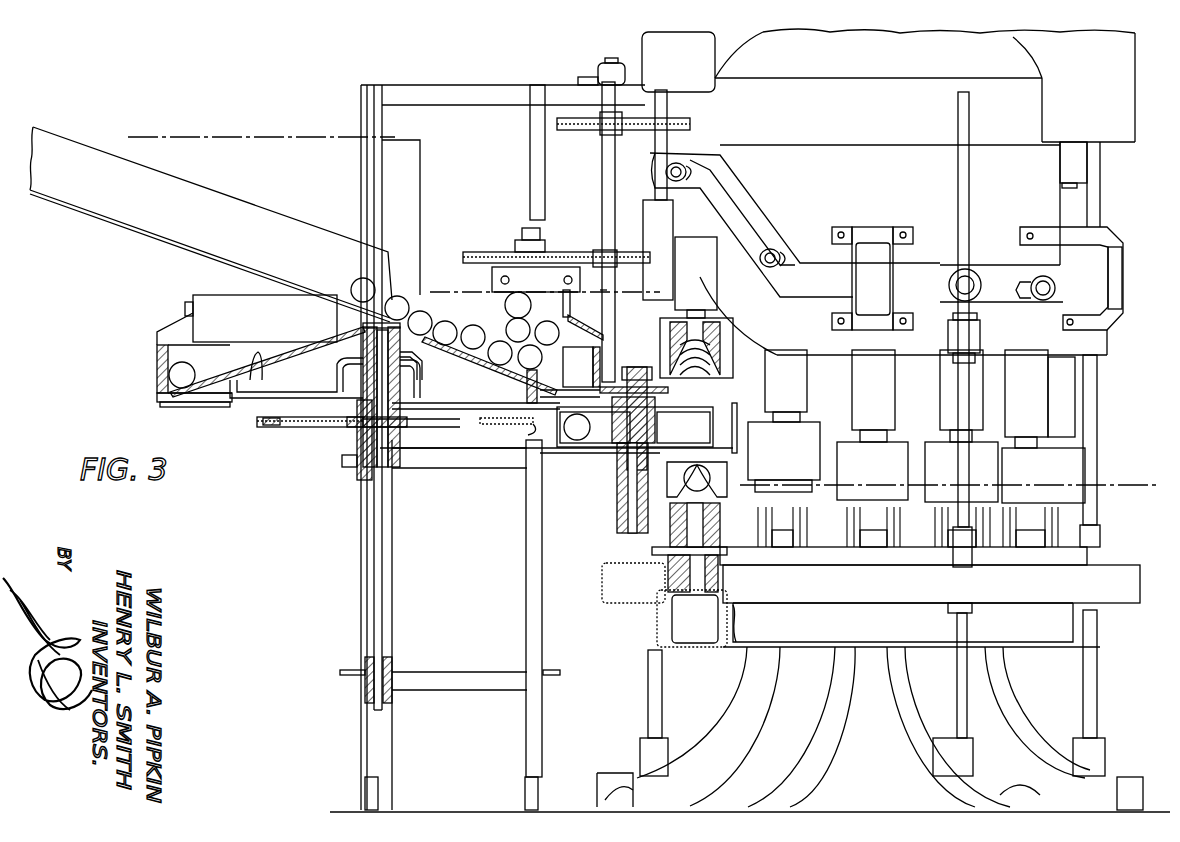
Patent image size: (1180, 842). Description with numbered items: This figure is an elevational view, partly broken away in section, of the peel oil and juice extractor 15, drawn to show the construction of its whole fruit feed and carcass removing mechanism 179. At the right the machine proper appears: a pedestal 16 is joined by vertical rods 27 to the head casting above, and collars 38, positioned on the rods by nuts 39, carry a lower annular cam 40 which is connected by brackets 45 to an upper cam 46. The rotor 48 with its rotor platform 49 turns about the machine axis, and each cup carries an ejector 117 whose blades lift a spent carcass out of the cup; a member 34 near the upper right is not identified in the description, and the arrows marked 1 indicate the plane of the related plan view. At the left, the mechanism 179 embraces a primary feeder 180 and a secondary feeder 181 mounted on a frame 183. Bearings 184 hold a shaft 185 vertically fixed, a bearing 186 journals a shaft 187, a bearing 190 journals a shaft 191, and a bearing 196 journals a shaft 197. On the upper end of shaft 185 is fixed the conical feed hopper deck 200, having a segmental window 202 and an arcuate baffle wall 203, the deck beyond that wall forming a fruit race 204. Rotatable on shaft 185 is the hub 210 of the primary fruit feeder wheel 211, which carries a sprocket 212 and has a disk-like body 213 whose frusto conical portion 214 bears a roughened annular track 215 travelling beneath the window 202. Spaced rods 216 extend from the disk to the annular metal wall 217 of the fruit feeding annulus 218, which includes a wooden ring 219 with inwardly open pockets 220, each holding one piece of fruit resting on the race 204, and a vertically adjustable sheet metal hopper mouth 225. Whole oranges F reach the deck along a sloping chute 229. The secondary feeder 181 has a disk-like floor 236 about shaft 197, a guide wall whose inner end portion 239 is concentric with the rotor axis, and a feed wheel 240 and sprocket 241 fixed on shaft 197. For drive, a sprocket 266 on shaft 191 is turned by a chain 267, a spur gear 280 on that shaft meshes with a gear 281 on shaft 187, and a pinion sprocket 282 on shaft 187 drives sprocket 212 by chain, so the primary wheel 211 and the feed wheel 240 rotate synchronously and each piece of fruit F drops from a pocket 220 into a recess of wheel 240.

The section line 1 is at (152, 134).
The peel oil and juice extractor 15 is at (503, 76).
The pedestal 16 is at (738, 722).
The rods 27 is at (970, 185).
The block 34 is at (1074, 186).
The collars 38 is at (980, 335).
The nuts 39 is at (953, 360).
The lower annular cam 40 is at (1085, 345).
The brackets 45 is at (1114, 276).
The upper cam 46 is at (934, 256).
The rotor 48 is at (1088, 400).
The rotor platform 49 is at (655, 552).
The ejector 117 is at (713, 537).
The whole fruit feed and carcass removing mechanism 179 is at (243, 513).
The primary whole fruit feeder 180 is at (168, 308).
The secondary fruit feeder 181 is at (522, 477).
The frame 183 is at (355, 538).
The bearings 184 is at (362, 467).
The shaft 185 is at (378, 592).
The bearing 186 is at (492, 283).
The shaft 187 is at (530, 226).
The bearing 190 is at (607, 72).
The shaft 191 is at (603, 180).
The bearing 196 is at (618, 495).
The shaft 197 is at (630, 518).
The conical feed hopper deck 200 is at (358, 330).
The segmental shaped window 202 is at (455, 368).
The arcuate baffle wall 203 is at (566, 316).
The fruit race 204 is at (169, 370).
The hub 210 is at (343, 407).
The primary fruit feeder wheel 211 is at (224, 410).
The sprocket 212 is at (303, 428).
The disk-like body 213 is at (476, 398).
The frusto conical portion 214 is at (515, 378).
The roughened annular track 215 is at (266, 367).
The rods 216 is at (180, 407).
The annular metal wall 217 is at (165, 389).
The fruit feeding annulus 218 is at (152, 340).
The wooden ring 219 is at (578, 372).
The pockets 220 is at (590, 350).
The annular sheet metal hopper mouth 225 is at (228, 294).
The sloping chute 229 is at (135, 232).
The disk-like floor 236 is at (593, 452).
The inner end portion 239 is at (742, 420).
The feed wheel 240 is at (696, 360).
The sprocket 241 is at (634, 434).
The sprocket 266 is at (597, 133).
The chain 267 is at (652, 130).
The spur gear 280 is at (604, 250).
The gear 281 is at (510, 255).
The pinion sprocket 282 is at (530, 430).
The whole oranges F is at (490, 335).